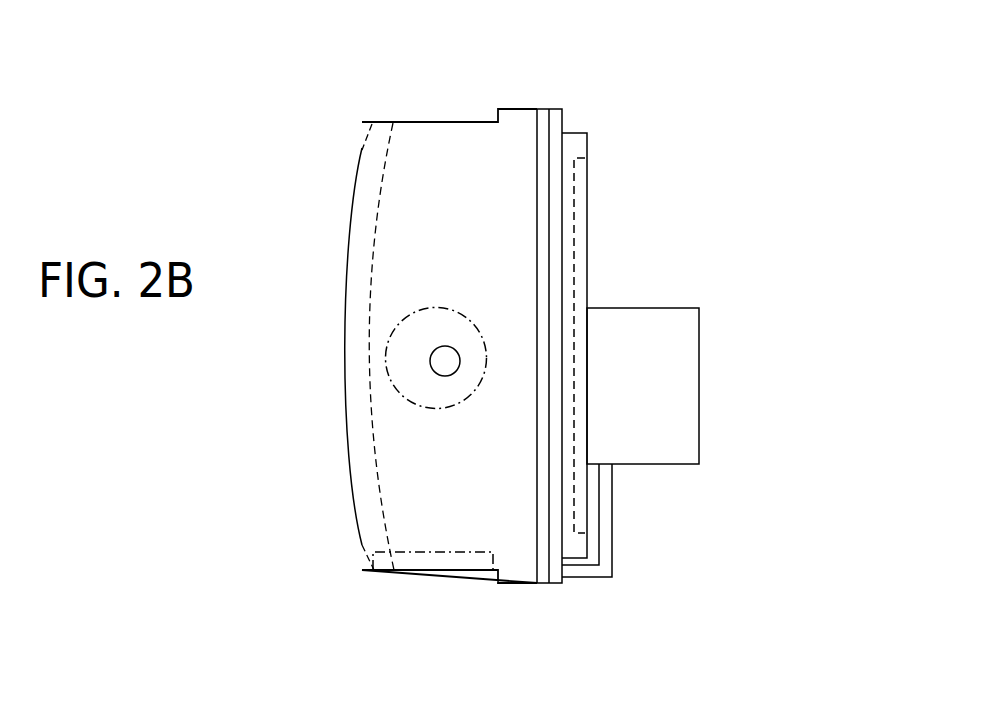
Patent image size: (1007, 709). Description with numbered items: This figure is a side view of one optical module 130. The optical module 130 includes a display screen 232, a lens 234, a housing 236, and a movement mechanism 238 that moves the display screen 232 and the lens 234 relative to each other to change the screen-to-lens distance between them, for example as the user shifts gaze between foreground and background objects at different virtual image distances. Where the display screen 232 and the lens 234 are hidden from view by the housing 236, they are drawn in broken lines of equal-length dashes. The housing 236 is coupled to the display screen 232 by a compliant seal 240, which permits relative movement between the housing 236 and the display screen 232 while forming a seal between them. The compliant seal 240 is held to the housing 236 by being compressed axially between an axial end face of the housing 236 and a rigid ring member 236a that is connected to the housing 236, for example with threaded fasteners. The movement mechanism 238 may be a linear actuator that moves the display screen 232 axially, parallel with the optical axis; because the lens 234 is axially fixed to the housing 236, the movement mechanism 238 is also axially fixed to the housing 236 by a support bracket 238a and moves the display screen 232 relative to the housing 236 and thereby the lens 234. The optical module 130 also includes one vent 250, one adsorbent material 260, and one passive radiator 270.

The optical module 130 is at (716, 145).
The display screen 232 is at (574, 225).
The lens 234 is at (350, 483).
The housing 236 is at (440, 121).
The rigid ring member 236a is at (562, 112).
The movement mechanism 238 is at (699, 368).
The support bracket 238a is at (612, 533).
The compliant seal 240 is at (562, 178).
The vent 250 is at (430, 360).
The adsorbent material 260 is at (457, 553).
The passive radiator 270 is at (460, 402).